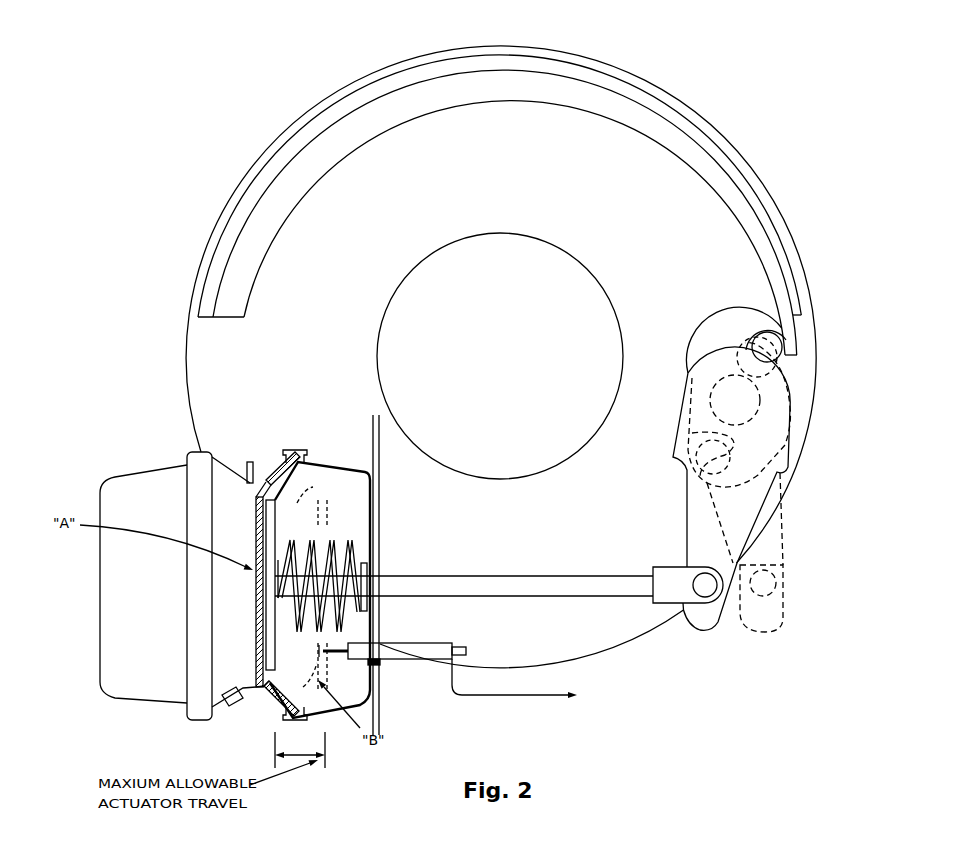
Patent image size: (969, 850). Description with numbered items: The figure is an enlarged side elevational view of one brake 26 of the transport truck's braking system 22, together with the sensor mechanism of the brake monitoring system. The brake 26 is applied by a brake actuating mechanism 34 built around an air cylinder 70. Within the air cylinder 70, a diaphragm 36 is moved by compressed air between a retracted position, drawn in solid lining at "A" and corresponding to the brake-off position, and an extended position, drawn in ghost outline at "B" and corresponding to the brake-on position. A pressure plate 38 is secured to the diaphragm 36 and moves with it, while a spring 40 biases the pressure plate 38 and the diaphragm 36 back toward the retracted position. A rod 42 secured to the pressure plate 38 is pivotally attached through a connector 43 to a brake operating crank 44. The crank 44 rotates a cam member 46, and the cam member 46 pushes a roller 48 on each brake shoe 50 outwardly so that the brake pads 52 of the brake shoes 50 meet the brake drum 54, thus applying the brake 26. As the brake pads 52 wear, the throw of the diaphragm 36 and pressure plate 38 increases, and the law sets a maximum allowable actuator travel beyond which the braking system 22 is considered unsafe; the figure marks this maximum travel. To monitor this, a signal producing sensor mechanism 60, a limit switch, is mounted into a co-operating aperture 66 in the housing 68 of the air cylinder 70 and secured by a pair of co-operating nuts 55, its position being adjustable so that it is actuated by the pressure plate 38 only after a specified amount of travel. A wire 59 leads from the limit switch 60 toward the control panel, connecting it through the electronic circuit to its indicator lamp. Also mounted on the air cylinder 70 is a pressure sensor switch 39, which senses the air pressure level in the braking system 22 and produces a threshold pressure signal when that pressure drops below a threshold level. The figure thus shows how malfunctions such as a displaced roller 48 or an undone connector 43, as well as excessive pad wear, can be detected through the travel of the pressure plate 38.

The braking system 22 is at (202, 544).
The brake 26 is at (643, 347).
The brake actuating mechanism 34 is at (288, 383).
The diaphragm 36 is at (310, 486).
The pressure plate 38 is at (331, 503).
The pressure sensor switch 39 is at (236, 707).
The spring 40 is at (350, 548).
The rod 42 is at (470, 575).
The connector 43 is at (672, 577).
The brake operating crank 44 is at (698, 490).
The cam member 46 is at (723, 327).
The roller 48 is at (790, 349).
The brake shoe 50 is at (427, 96).
The brake pad 52 is at (551, 47).
The brake drum 54 is at (432, 53).
The co-operating nuts 55 is at (376, 664).
The wire 59 is at (497, 695).
The signal producing sensor mechanism 60 is at (420, 643).
The aperture 66 is at (370, 643).
The housing 68 is at (372, 612).
The air cylinder 70 is at (150, 697).